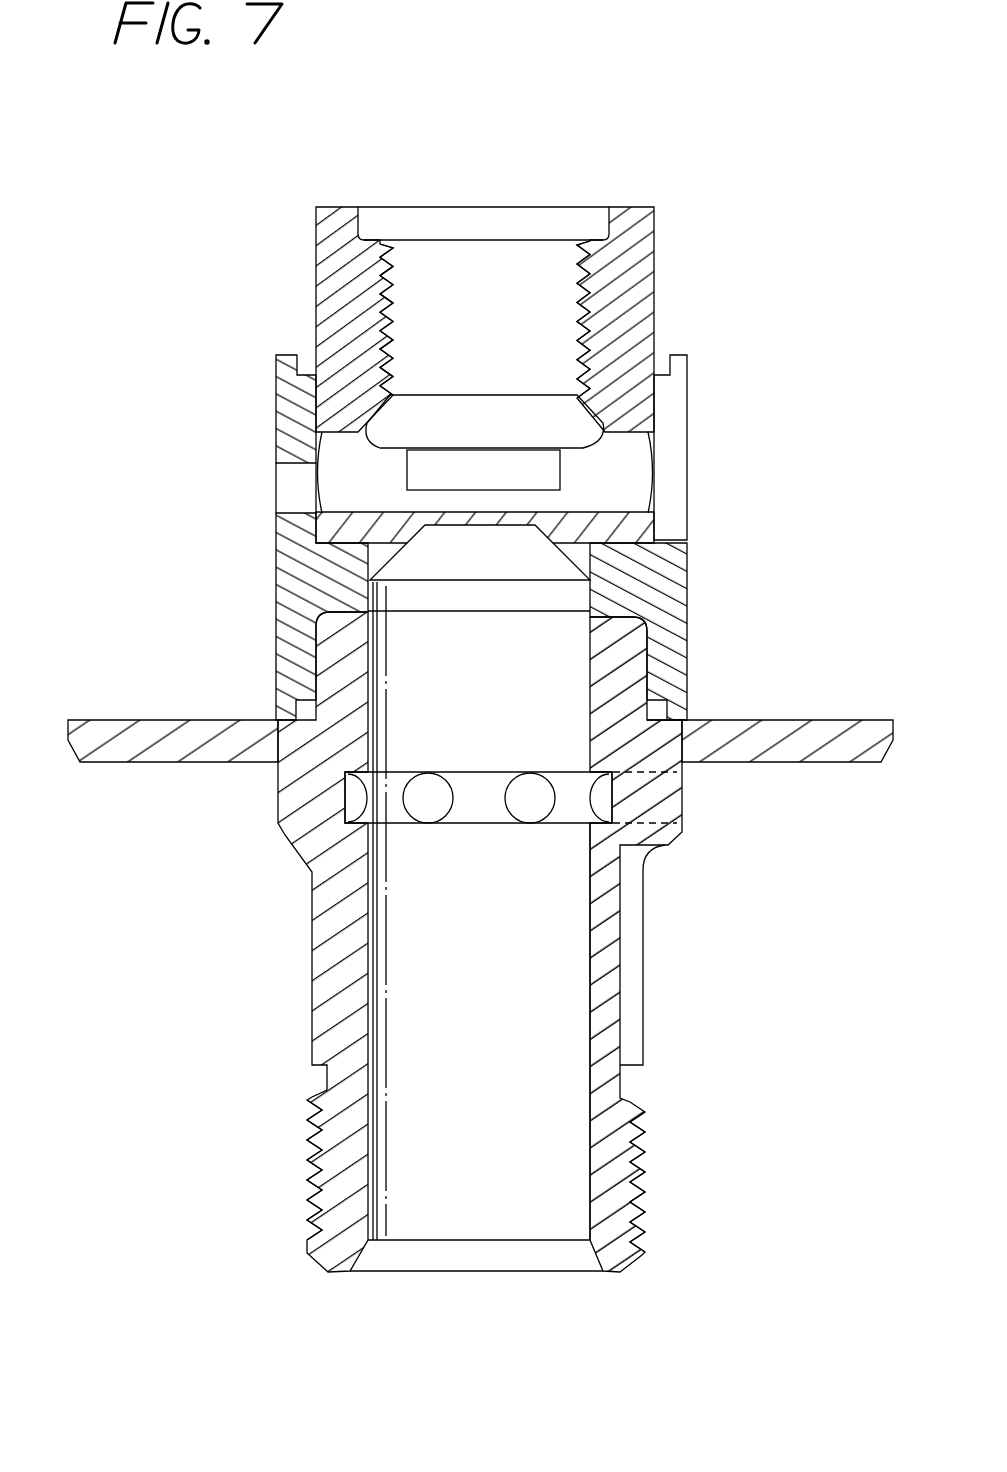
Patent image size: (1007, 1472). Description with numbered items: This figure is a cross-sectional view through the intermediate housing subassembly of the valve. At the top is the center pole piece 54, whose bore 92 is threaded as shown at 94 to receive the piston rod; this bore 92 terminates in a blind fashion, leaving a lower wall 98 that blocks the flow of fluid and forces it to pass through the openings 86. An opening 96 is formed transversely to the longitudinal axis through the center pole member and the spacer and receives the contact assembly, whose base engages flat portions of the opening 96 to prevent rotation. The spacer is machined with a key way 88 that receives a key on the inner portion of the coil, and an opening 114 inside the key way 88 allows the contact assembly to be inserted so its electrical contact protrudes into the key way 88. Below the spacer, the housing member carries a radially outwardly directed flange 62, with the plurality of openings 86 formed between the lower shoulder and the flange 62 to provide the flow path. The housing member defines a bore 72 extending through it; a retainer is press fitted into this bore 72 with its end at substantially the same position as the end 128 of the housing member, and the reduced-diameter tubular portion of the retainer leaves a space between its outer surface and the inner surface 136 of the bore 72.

The center pole piece 54 is at (657, 262).
The counterbore 92 is at (367, 224).
The threads 94 is at (582, 288).
The opening 96 is at (292, 489).
The key way 88 is at (676, 405).
The lower wall 98 is at (477, 527).
The opening 114 is at (632, 477).
The flange 62 is at (68, 739).
The inner surface 136 is at (367, 970).
The openings 86 is at (428, 822).
The bore 72 is at (588, 1170).
The end 128 is at (613, 1272).